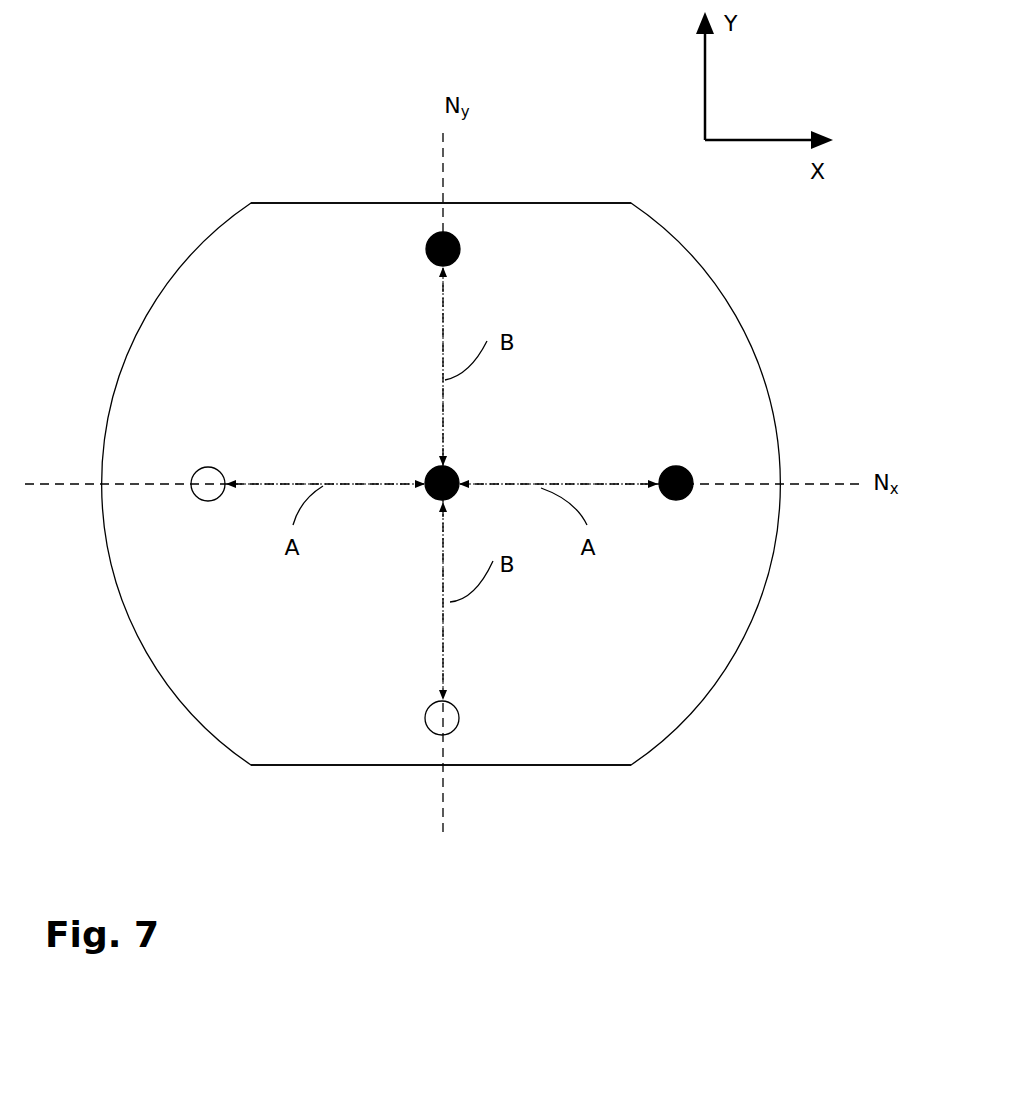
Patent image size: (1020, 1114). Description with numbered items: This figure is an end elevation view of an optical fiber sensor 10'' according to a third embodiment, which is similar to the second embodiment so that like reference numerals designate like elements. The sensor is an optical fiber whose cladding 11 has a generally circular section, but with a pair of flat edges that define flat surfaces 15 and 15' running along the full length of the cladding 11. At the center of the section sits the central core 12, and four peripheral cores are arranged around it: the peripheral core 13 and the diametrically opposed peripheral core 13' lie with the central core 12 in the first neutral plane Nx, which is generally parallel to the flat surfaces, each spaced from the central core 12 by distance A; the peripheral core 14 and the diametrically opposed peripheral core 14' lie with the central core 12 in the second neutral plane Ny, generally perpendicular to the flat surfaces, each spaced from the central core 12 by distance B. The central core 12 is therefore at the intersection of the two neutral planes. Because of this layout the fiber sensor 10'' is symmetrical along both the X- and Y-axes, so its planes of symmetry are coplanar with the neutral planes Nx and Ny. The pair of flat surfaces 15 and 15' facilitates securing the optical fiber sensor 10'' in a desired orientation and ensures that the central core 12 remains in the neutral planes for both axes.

The optical fiber sensor 10'' is at (451, 518).
The cladding 11 is at (267, 724).
The central core 12 is at (433, 497).
The peripheral core 13 is at (689, 524).
The peripheral core 13' is at (197, 441).
The peripheral core 14 is at (498, 244).
The peripheral core 14' is at (496, 697).
The flat surface 15 is at (441, 803).
The flat surface 15' is at (441, 165).